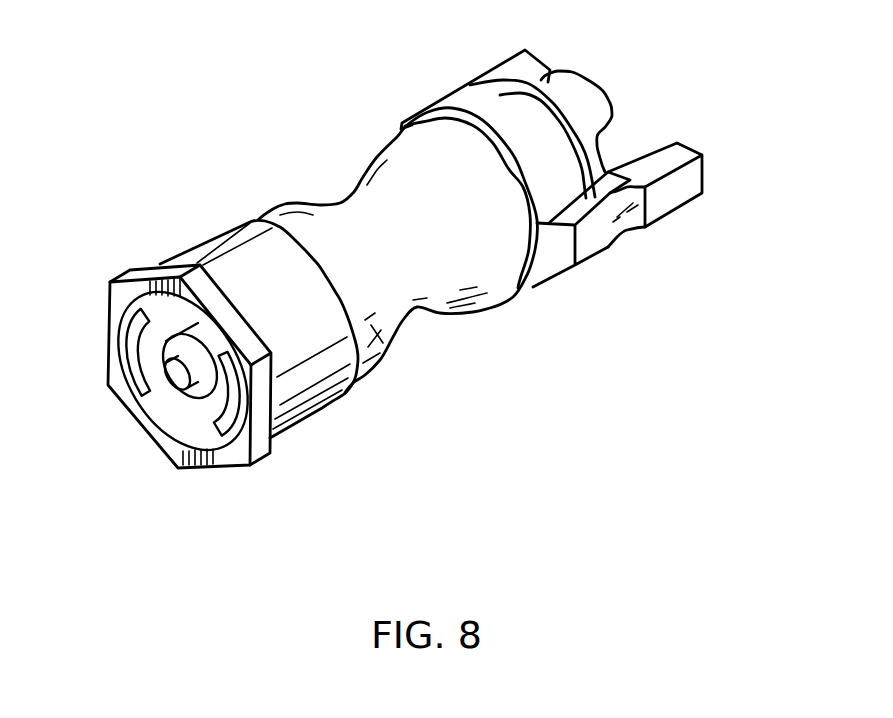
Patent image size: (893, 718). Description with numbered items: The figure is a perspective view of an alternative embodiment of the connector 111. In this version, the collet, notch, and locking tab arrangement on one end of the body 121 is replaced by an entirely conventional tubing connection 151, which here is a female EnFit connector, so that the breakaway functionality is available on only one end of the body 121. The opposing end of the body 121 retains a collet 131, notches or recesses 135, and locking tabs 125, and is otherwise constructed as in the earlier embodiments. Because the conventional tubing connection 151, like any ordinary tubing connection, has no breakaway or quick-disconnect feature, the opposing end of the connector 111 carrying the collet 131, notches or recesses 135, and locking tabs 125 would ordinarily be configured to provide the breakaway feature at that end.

The connector 111 is at (247, 54).
The body 121 is at (361, 181).
The locking tabs 125 is at (537, 63).
The collet 131 is at (587, 100).
The notches or recesses 135 is at (602, 150).
The conventional tubing connection 151 is at (153, 436).